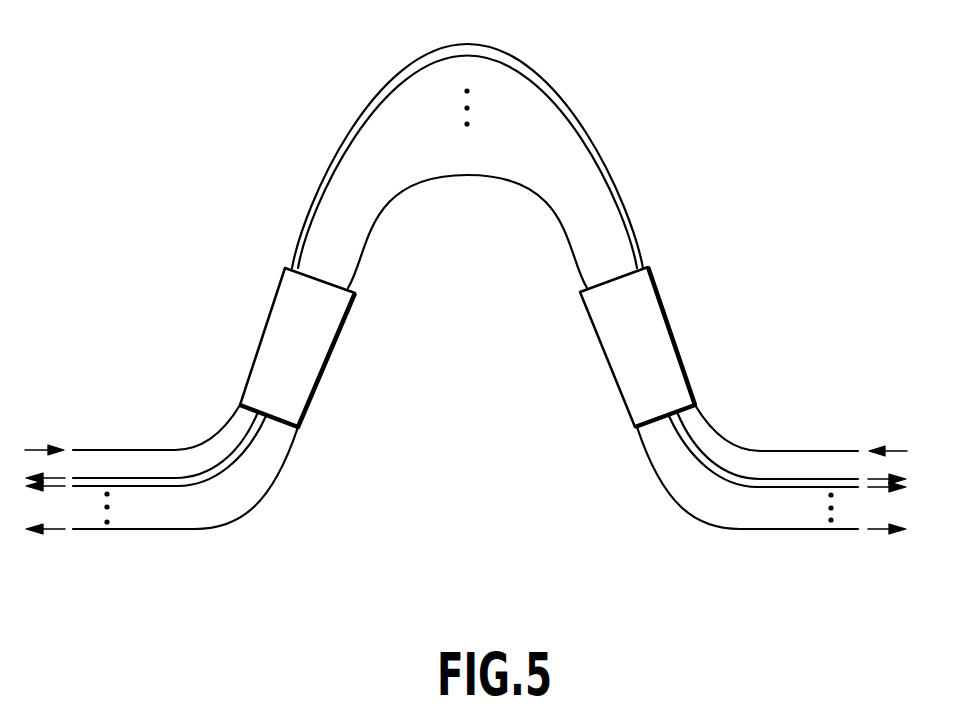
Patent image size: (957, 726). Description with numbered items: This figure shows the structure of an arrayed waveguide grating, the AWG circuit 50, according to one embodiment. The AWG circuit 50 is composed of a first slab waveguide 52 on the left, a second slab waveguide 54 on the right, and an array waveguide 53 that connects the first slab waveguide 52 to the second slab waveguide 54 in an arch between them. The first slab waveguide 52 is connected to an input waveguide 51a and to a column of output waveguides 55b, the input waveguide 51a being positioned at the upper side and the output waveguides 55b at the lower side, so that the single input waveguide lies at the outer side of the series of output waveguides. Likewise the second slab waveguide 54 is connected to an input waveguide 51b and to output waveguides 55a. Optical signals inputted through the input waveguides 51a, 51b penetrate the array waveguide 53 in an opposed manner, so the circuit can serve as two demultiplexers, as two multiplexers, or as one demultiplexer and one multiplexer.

The AWG circuit 50 is at (214, 171).
The input waveguide 51a is at (133, 448).
The input waveguide 51b is at (792, 448).
The first slab waveguide 52 is at (328, 368).
The array waveguide 53 is at (530, 215).
The second slab waveguide 54 is at (609, 366).
The output waveguides 55a is at (793, 473).
The output waveguides 55b is at (147, 471).